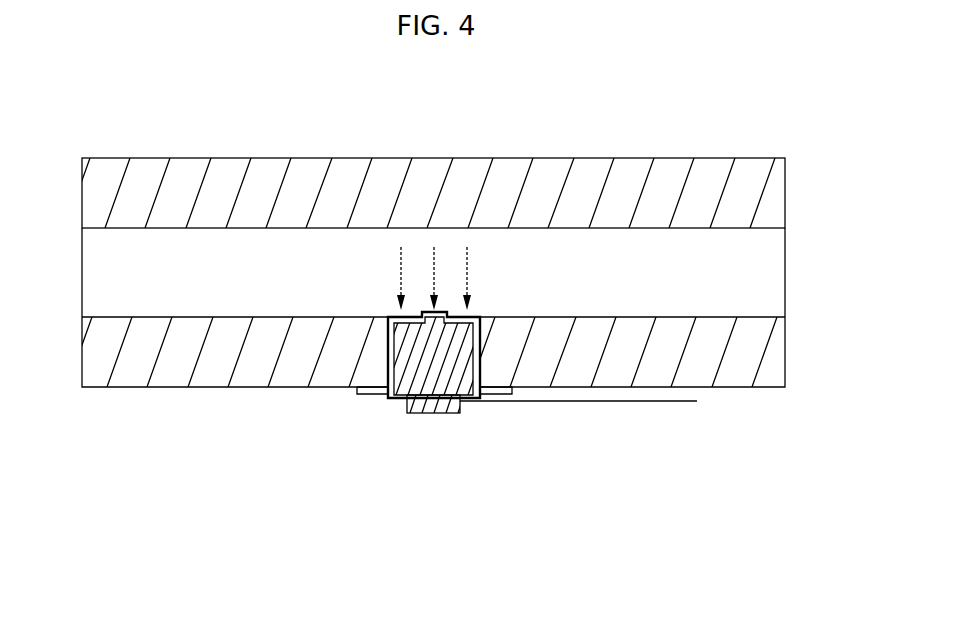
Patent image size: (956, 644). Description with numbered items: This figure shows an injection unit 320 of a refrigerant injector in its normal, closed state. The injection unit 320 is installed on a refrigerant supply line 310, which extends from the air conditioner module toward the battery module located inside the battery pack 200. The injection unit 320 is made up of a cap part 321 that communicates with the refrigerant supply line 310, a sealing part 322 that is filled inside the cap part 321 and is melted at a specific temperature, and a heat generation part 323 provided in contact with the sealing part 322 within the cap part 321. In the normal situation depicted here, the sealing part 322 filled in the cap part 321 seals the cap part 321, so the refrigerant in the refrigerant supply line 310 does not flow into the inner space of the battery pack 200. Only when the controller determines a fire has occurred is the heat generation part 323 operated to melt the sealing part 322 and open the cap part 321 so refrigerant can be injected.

The battery pack 200 is at (543, 173).
The refrigerant supply line 310 is at (711, 270).
The injection unit 320 is at (527, 431).
The cap part 321 is at (478, 350).
The sealing part 322 is at (432, 413).
The heat generation part 323 is at (578, 452).